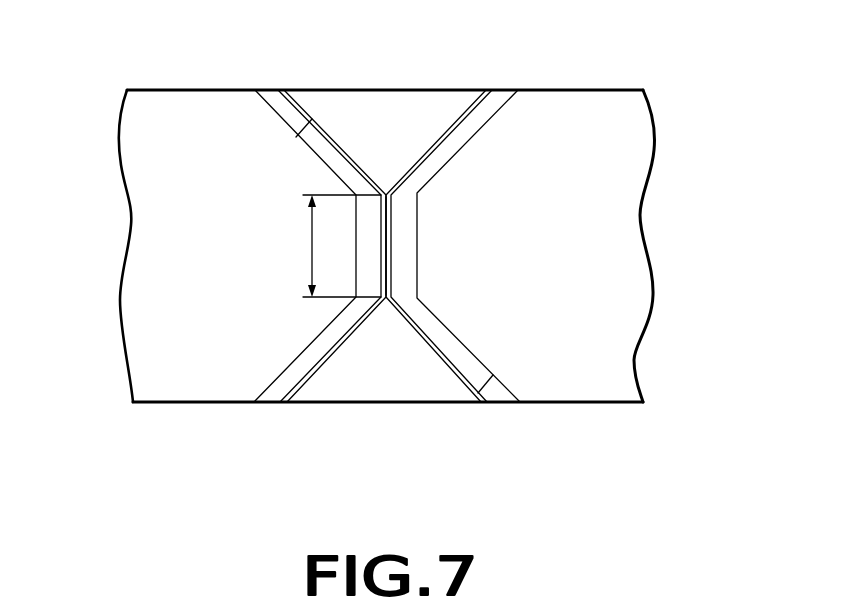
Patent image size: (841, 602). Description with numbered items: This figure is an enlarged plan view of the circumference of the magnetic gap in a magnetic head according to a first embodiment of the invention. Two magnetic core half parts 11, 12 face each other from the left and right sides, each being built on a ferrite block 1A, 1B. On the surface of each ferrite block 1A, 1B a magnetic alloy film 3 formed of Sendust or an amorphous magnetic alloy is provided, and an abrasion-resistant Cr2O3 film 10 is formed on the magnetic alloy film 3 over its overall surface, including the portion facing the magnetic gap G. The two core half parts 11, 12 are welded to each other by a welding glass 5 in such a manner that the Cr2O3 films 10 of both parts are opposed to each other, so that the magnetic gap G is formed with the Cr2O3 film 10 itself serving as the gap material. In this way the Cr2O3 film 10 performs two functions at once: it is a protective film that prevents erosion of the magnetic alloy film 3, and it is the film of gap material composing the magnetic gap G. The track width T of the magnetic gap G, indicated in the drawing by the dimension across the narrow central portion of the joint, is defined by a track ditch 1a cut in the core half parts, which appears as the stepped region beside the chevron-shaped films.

The ferrite block 1A is at (189, 392).
The ferrite block 1B is at (597, 393).
The track ditch 1a is at (300, 134).
The magnetic alloy film 3 is at (266, 92).
The welding glass 5 is at (393, 106).
The Cr2O3 film 10 is at (283, 90).
The magnetic core half part 11 is at (124, 215).
The magnetic core half part 12 is at (666, 242).
The magnetic gap G is at (388, 245).
The track width T is at (333, 246).